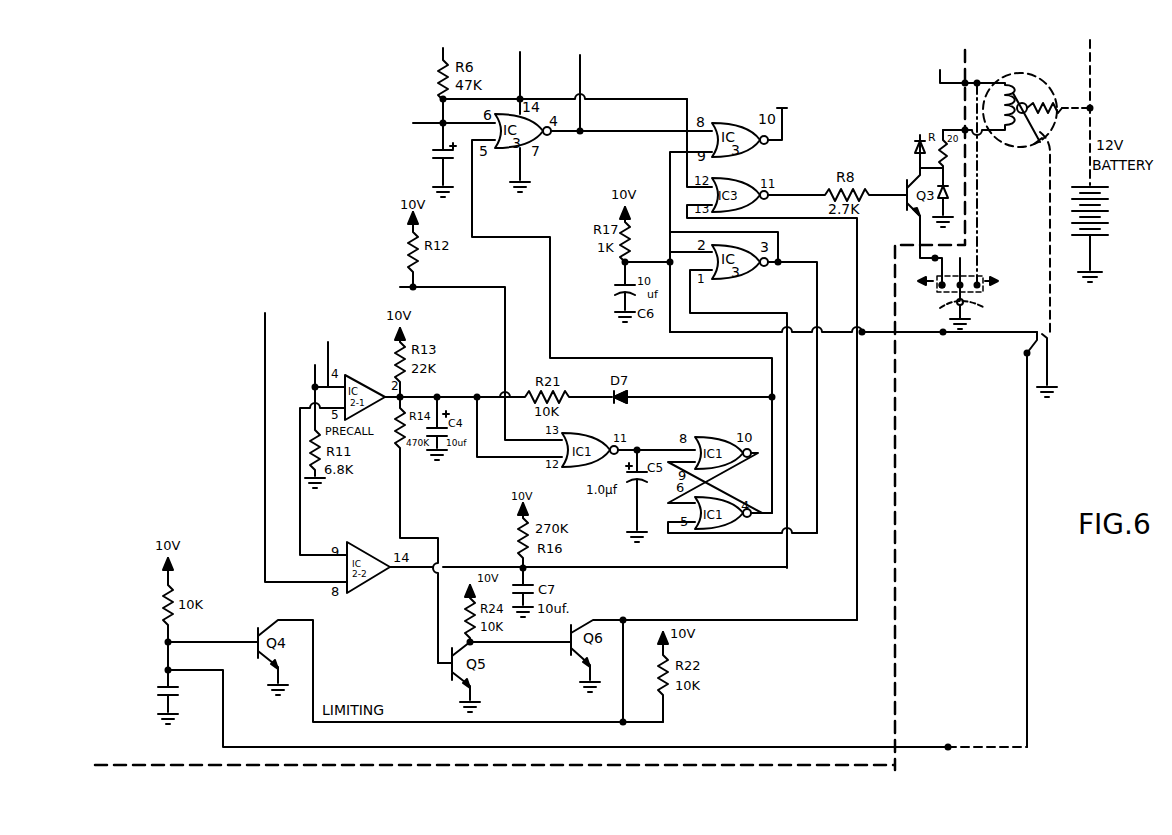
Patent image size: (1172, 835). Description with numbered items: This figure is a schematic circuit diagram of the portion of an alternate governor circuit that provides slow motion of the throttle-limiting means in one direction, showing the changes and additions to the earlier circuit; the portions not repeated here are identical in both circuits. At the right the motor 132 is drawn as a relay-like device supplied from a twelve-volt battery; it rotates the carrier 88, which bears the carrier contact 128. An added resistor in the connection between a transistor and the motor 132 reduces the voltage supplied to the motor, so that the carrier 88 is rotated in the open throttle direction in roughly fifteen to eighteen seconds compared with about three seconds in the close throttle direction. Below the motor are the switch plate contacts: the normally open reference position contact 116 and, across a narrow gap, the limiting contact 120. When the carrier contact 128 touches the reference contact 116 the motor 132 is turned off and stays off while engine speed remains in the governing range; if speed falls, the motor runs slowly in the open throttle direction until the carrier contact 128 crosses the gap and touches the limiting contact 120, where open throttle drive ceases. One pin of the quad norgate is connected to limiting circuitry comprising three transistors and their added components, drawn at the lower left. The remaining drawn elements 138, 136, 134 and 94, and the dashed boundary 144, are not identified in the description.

The motor 132 is at (1026, 78).
The relay contact arm 138 is at (961, 263).
The movable contact 136 is at (987, 285).
The contact 134 is at (935, 300).
The carrier 88 is at (985, 306).
The ground contact 94 is at (963, 308).
The reference position contact 116 is at (1025, 350).
The limiting contact 120 is at (1024, 364).
The carrier contact 128 is at (1047, 343).
The dashed enclosure boundary 144 is at (898, 420).